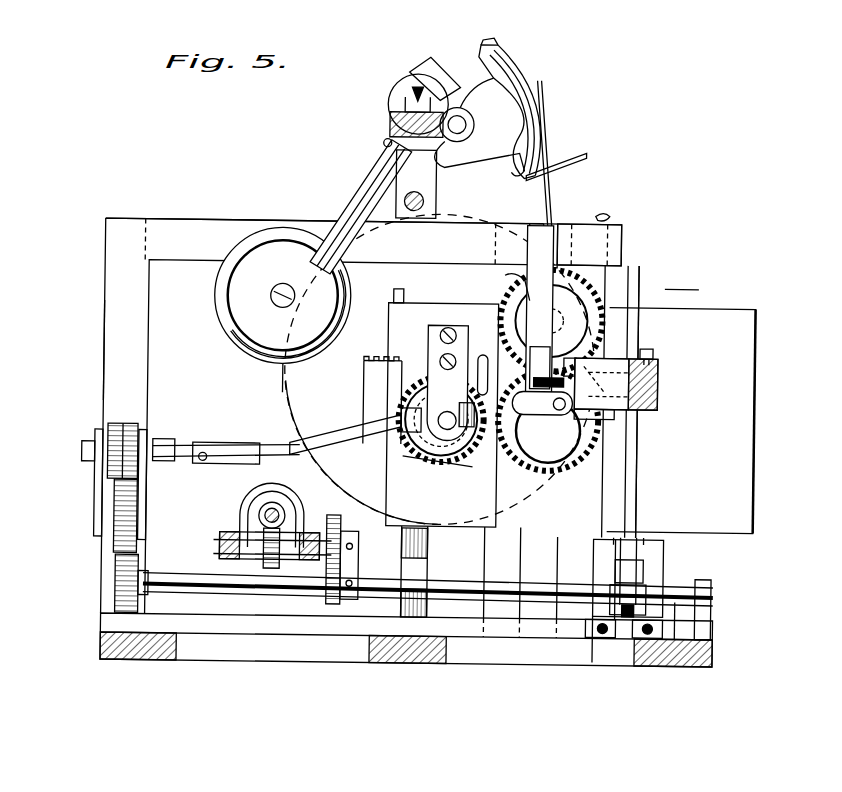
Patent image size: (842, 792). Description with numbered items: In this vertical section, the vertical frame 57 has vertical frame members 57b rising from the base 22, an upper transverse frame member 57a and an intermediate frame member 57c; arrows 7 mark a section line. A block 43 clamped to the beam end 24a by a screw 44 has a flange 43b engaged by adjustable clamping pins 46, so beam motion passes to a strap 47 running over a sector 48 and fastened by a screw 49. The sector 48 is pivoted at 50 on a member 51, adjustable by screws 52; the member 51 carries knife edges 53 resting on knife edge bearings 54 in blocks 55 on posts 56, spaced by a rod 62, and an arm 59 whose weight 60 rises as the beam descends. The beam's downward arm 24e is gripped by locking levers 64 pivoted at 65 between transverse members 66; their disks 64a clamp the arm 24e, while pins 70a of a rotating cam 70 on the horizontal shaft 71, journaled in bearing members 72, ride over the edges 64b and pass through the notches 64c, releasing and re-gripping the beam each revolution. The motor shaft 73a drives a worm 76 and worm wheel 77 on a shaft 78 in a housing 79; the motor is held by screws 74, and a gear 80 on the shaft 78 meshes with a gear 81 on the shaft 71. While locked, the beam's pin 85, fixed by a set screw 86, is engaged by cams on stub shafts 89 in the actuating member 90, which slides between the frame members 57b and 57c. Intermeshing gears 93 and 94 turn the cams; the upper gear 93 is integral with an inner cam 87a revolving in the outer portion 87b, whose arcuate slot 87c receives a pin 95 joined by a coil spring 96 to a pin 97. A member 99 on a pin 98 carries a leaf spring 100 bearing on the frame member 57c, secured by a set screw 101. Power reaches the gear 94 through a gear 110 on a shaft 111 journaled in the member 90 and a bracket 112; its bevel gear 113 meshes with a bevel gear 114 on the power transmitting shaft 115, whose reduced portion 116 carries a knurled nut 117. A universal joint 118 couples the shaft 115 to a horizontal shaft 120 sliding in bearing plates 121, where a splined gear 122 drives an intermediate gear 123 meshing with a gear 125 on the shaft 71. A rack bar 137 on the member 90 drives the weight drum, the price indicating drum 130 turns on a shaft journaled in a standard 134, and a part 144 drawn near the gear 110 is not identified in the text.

The section line 7- 7 is at (692, 288).
The base 22 is at (100, 650).
The bracket plate 24a is at (660, 412).
The bracket plate arm 24e is at (640, 472).
The block 43 is at (648, 365).
The block portion 43b is at (598, 358).
The hatched member 44 is at (650, 380).
The ratchet wheel 46 is at (551, 352).
The connecting rod 47 is at (546, 212).
The sector lever 48 is at (532, 98).
The sector tip 49 is at (505, 40).
The lever 50 is at (462, 128).
The bar 51 is at (432, 62).
The cam disc 52 is at (405, 78).
The pointer 53 is at (410, 90).
The notch 54 is at (405, 107).
The hatched block 55 is at (392, 122).
The pivot 56 is at (395, 172).
The frame 57 is at (118, 303).
The frame top bar 57a is at (186, 228).
The frame side bar 57b is at (575, 512).
The frame column 57c is at (492, 556).
The arm 59 is at (348, 187).
The wheel 60 is at (270, 250).
The block 62 is at (420, 198).
The slide block 64 is at (603, 540).
The slide rod 64a is at (642, 540).
The slide part 64b is at (645, 548).
The slide part 64c is at (650, 580).
The screw 65 is at (600, 640).
The base plate 66 is at (472, 635).
The pin 70 is at (630, 612).
The pin collar 70a is at (648, 565).
The bearing pedestal 71 is at (692, 594).
The shaft 72 is at (112, 568).
The bearing 73a is at (266, 504).
The cam path 74 is at (386, 282).
The bearing cap 76 is at (272, 497).
The key 77 is at (268, 566).
The shaft 78 is at (222, 548).
The bracket 79 is at (245, 512).
The gear 80 is at (332, 520).
The base section 81 is at (334, 655).
The slot 85 is at (628, 425).
The screw 86 is at (652, 352).
The pawl 87a is at (582, 339).
The pawl arm 87b is at (612, 291).
The pawl hook 87c is at (528, 312).
The gear 89 is at (612, 303).
The plate 90 is at (392, 332).
The pawl 93 is at (510, 280).
The bar 94 is at (568, 460).
The pin 95 is at (568, 330).
The block 96 is at (612, 272).
The spring 97 is at (602, 225).
The ratchet wheel 98 is at (535, 518).
The pawl 99 is at (407, 491).
The slot 100 is at (480, 362).
The pin 101 is at (433, 457).
The rack 110 is at (392, 370).
The screws 111 is at (442, 361).
The slotted bar 112 is at (430, 340).
The lever 113 is at (428, 468).
The rack teeth 114 is at (367, 395).
The link 115 is at (300, 425).
The pivot 116 is at (500, 398).
The block 117 is at (468, 408).
The rod 118 is at (207, 437).
The hub 120 is at (85, 452).
The discs 121 is at (105, 438).
The gear 122 is at (130, 425).
The gear 123 is at (118, 497).
The gear 125 is at (120, 588).
The line 130 is at (283, 375).
The column 134 is at (398, 540).
The tab 137 is at (402, 296).
The rack 144 is at (330, 372).